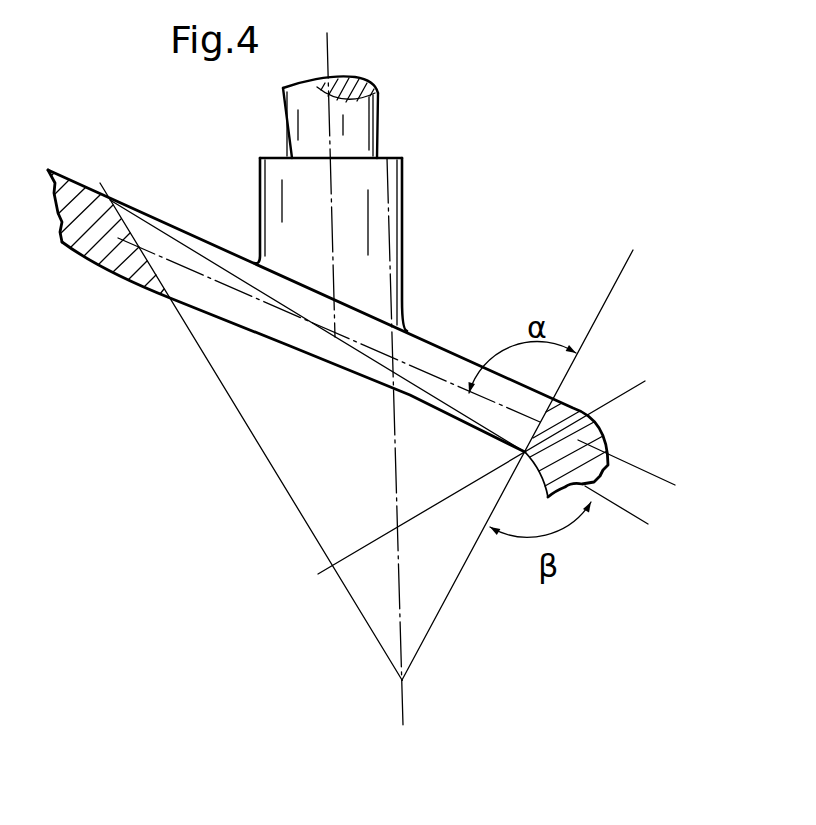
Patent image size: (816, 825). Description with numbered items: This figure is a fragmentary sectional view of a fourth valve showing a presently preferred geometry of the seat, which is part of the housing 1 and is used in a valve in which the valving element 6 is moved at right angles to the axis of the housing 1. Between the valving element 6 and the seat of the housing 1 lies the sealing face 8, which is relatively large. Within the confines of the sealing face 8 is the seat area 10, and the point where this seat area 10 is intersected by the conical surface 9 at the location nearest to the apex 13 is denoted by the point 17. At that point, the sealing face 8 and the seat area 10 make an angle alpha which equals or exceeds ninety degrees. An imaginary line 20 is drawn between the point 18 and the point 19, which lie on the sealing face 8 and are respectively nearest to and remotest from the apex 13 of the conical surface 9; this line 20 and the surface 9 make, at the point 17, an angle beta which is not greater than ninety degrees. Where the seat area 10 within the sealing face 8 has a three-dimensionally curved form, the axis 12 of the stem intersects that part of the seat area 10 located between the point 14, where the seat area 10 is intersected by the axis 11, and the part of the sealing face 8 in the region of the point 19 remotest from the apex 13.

The housing 1 is at (110, 248).
The valving element 6 is at (383, 183).
The sealing face 8 is at (150, 277).
The conical surface 9 is at (625, 268).
The seat area 10 is at (657, 476).
The axis 11 is at (397, 610).
The axis of the stem 12 is at (330, 50).
The apex 13 is at (402, 680).
The point of intersection 14 is at (392, 362).
The point of intersection 17 is at (590, 398).
The point nearest to the apex 18 is at (468, 485).
The point remotest from the apex 19 is at (110, 200).
The imaginary line 20 is at (368, 356).